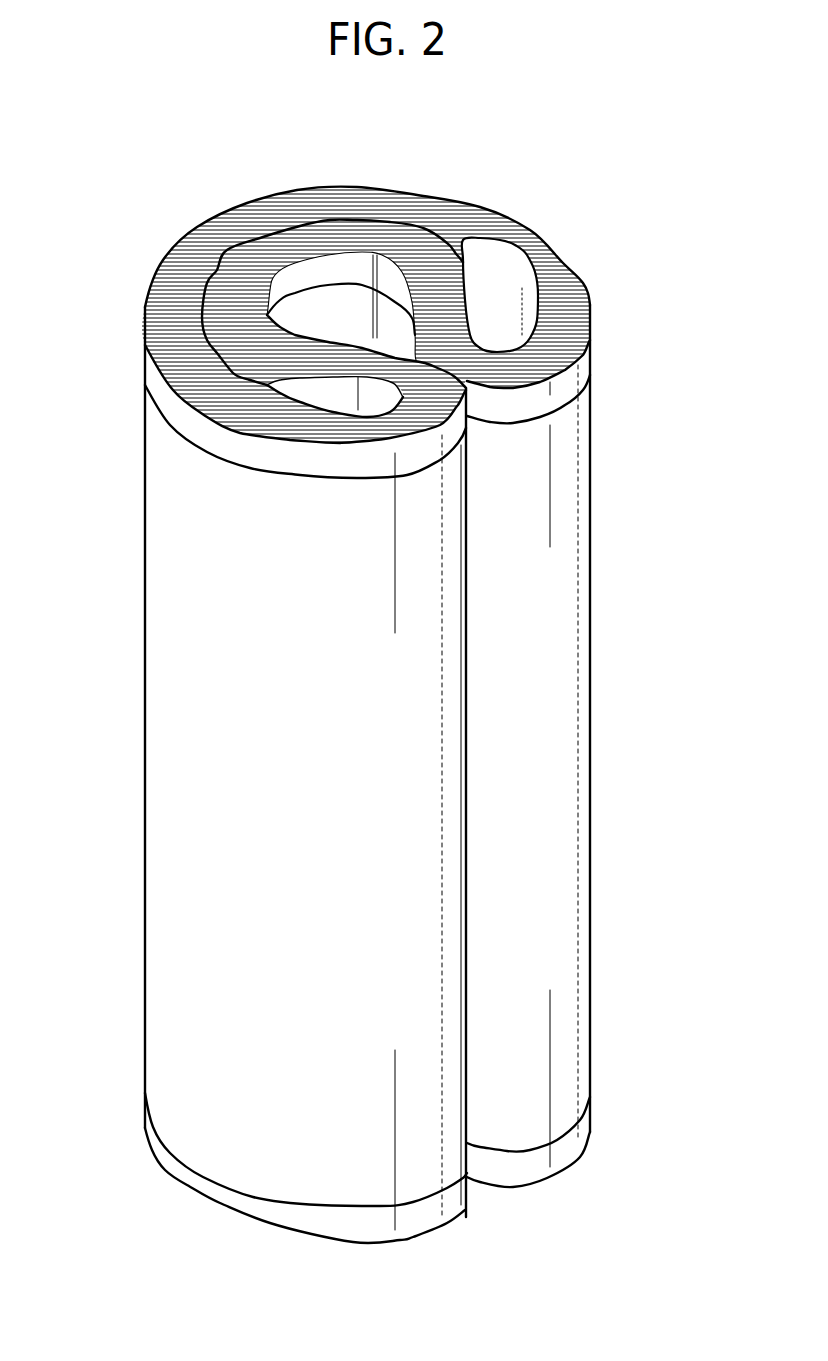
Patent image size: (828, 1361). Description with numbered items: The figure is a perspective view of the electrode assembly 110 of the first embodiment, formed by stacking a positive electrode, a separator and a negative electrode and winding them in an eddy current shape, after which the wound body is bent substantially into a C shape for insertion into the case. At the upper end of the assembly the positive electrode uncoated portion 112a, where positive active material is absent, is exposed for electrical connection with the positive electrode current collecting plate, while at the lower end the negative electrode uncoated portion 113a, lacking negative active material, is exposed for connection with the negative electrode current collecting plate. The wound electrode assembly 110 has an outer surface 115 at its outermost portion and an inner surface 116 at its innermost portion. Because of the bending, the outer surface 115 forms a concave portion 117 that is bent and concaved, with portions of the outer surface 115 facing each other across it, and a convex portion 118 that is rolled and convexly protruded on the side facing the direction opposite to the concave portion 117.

The electrode assembly 110 is at (499, 208).
The positive electrode uncoated portion 112a is at (540, 400).
The negative electrode uncoated portion 113a is at (293, 1215).
The outer surface 115 is at (240, 1122).
The inner surface 116 is at (330, 393).
The concave portion 117 is at (295, 263).
The convex portion 118 is at (225, 212).